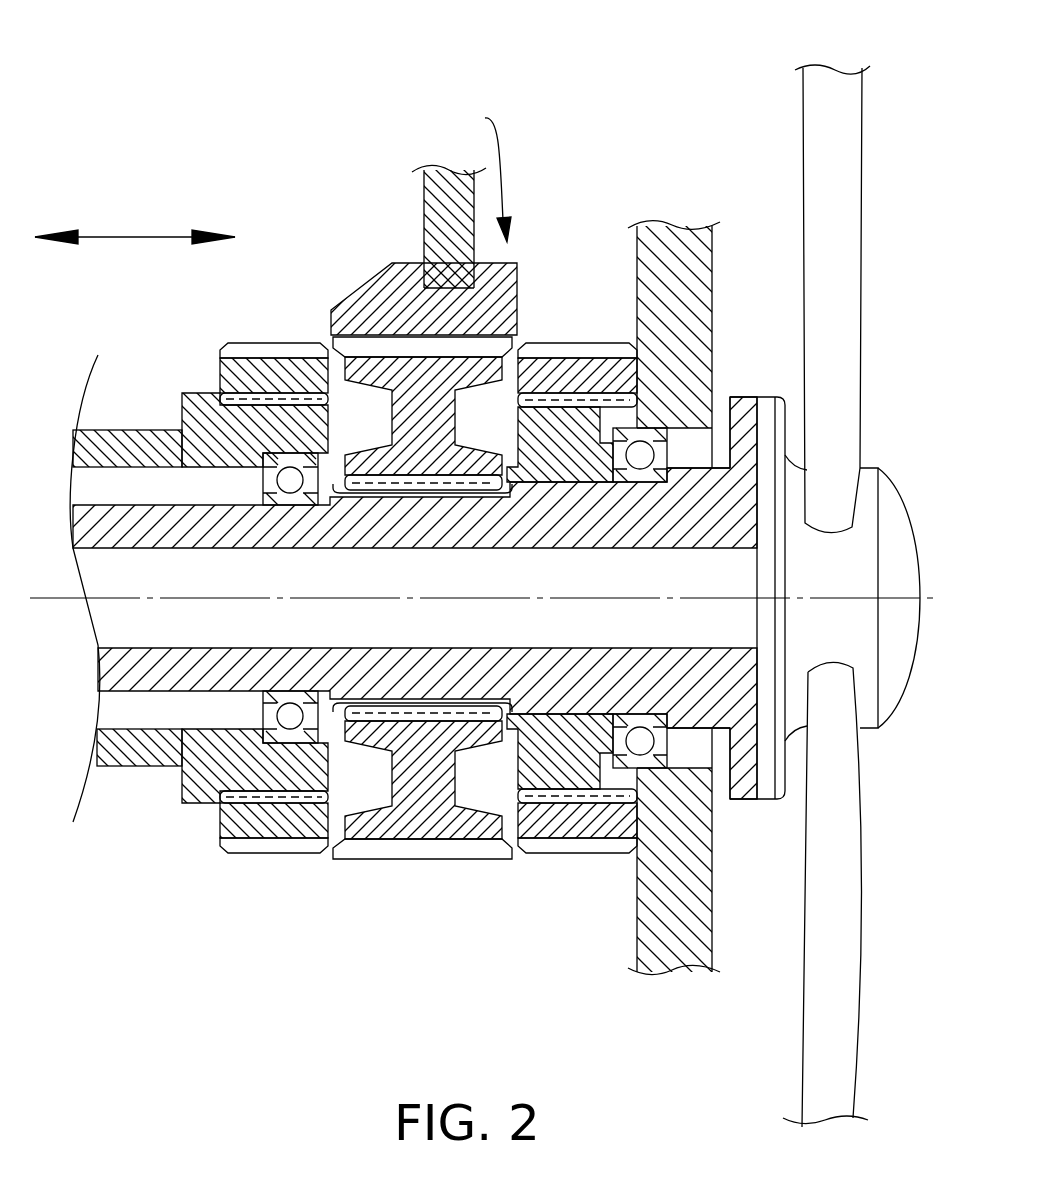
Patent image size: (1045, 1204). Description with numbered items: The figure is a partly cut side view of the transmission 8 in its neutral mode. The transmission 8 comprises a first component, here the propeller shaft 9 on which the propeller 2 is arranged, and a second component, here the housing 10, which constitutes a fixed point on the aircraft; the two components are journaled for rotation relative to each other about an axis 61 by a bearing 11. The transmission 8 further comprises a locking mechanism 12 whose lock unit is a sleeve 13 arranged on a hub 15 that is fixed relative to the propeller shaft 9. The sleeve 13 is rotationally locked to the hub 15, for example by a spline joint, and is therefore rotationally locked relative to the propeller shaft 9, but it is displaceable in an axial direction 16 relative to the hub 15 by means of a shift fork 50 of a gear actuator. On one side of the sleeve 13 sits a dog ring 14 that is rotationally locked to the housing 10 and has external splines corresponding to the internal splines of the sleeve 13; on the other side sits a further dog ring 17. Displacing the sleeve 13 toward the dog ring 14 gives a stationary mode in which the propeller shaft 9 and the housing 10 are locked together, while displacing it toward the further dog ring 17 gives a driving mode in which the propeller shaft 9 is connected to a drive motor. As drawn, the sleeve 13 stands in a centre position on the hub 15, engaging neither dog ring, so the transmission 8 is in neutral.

The propeller 2 is at (828, 148).
The transmission 8 is at (240, 61).
The propeller shaft 9 is at (163, 523).
The housing 10 is at (678, 258).
The bearing 11 is at (620, 740).
The locking mechanism 12 is at (482, 174).
The sleeve 13 is at (373, 302).
The dog ring 14 is at (600, 368).
The hub 15 is at (427, 777).
The axial direction 16 is at (130, 237).
The further dog ring 17 is at (258, 375).
The shift fork 50 is at (448, 219).
The axis 61 is at (55, 598).